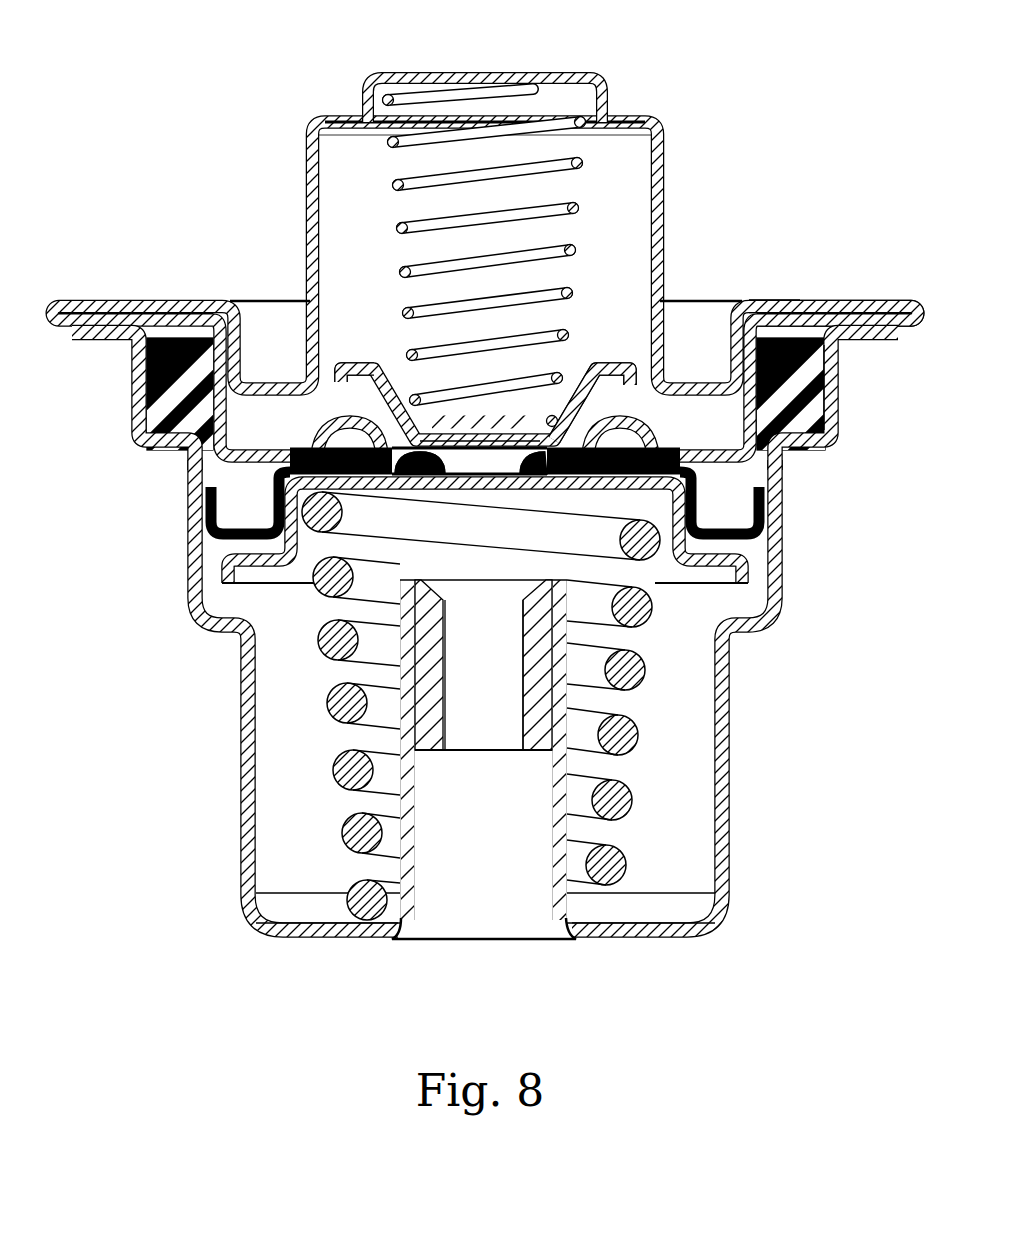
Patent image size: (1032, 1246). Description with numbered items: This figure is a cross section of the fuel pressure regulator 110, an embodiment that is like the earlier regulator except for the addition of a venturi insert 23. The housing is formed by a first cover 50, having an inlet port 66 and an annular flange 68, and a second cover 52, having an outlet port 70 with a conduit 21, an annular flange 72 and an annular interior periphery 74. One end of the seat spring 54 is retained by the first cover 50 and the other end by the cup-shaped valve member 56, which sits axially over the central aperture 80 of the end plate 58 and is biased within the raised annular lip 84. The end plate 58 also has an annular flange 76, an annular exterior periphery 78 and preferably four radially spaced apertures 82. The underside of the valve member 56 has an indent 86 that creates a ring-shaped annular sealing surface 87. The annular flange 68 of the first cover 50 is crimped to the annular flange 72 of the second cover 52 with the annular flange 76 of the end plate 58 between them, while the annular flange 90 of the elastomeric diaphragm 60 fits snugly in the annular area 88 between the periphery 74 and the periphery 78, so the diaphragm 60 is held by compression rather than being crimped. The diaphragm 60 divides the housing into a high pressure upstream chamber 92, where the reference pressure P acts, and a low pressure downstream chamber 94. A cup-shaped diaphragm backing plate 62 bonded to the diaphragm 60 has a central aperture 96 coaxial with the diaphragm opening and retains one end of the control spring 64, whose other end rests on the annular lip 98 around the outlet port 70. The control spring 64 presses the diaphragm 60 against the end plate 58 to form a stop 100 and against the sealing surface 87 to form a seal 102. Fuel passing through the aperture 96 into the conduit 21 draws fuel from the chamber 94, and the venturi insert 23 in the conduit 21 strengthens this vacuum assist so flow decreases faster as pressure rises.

The pressure regulator 110 is at (292, 88).
The reference pressure P is at (306, 124).
The high pressure upstream chamber 92 is at (338, 162).
The valve member 56 is at (380, 355).
The annular lip 84 is at (297, 395).
The annular interior periphery 74 is at (142, 393).
The annular exterior periphery 78 is at (175, 440).
The radially spaced apertures 82 is at (273, 452).
The inlet port 66 is at (548, 76).
The first cover 50 is at (670, 150).
The seat spring 54 is at (578, 244).
The annular area 88 is at (787, 298).
The annular flange 76 is at (868, 298).
The annular flange 68 is at (893, 300).
The annular flange 72 is at (860, 342).
The annular flange 90 is at (848, 365).
The central aperture 80 is at (581, 402).
The end plate 58 is at (745, 465).
The stop 100 is at (765, 512).
The diaphragm 60 is at (760, 578).
The diaphragm backing plate 62 is at (717, 584).
The central aperture 96 is at (448, 470).
The annular sealing surface 87 is at (486, 446).
The seal 102 is at (505, 455).
The indent 86 is at (450, 462).
The venturi insert 23 is at (428, 690).
The low pressure downstream chamber 94 is at (277, 757).
The conduit 21 is at (565, 705).
The control spring 64 is at (646, 735).
The second cover 52 is at (734, 805).
The annular lip 98 is at (424, 890).
The outlet port 70 is at (526, 922).